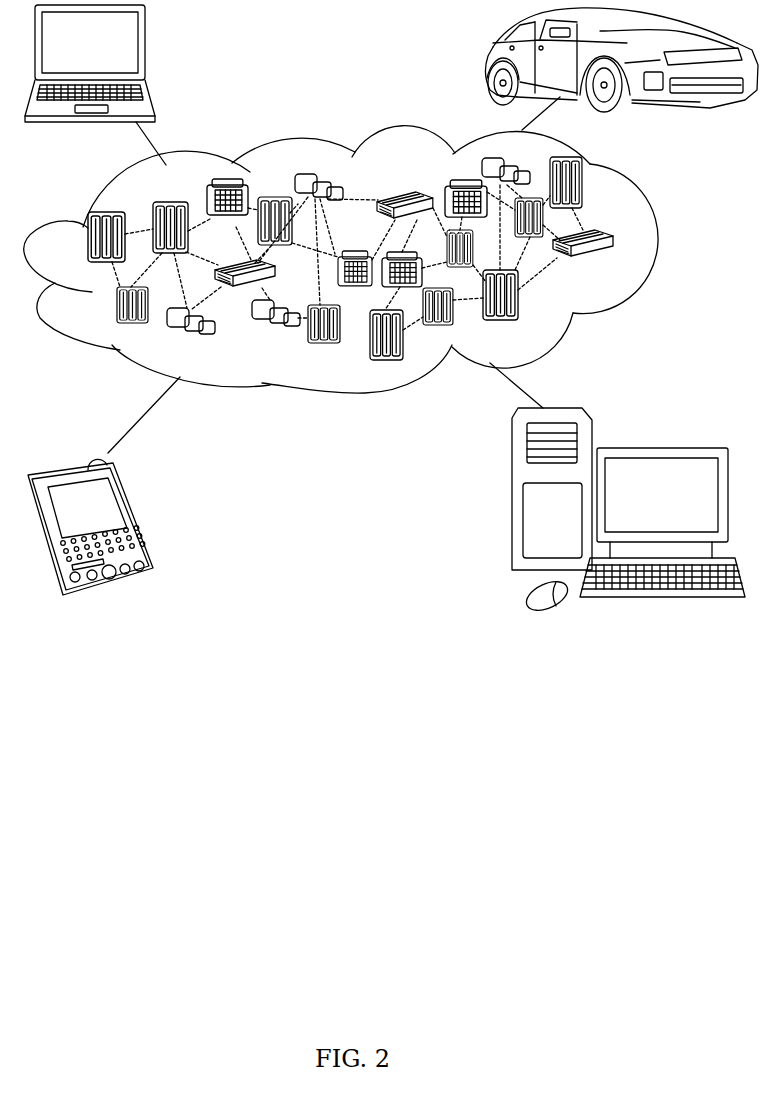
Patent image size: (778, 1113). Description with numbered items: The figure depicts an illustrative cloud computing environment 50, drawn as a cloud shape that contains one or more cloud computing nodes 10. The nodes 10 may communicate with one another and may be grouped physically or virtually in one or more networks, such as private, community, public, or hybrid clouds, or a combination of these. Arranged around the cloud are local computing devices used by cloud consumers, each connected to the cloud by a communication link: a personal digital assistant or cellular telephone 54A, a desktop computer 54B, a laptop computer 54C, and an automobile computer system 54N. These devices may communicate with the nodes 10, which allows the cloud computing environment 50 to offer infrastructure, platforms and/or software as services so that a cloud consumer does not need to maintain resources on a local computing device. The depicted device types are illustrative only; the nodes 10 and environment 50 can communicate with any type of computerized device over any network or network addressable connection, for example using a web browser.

The cloud computing nodes 10 is at (365, 275).
The cloud computing environment 50 is at (662, 246).
The personal digital assistant or cellular telephone 54A is at (137, 517).
The desktop computer 54B is at (660, 448).
The laptop computer 54C is at (147, 50).
The automobile computer system 54N is at (487, 62).